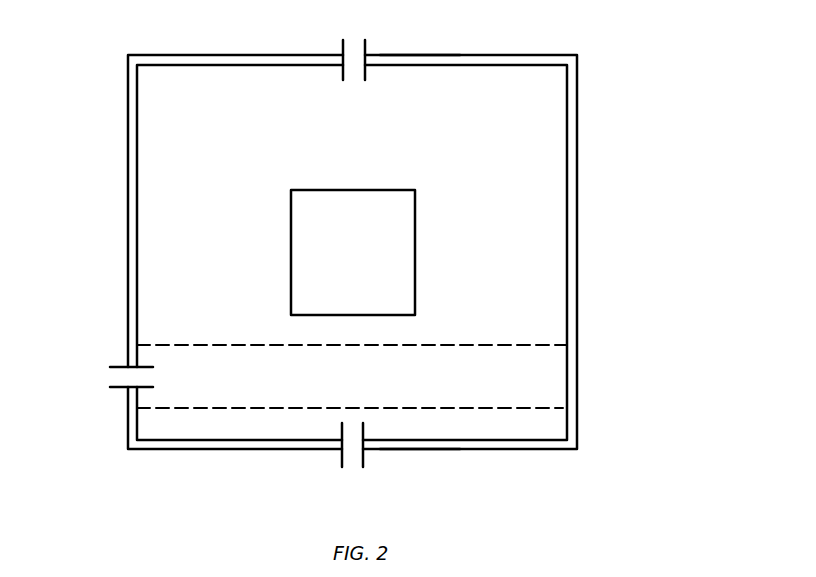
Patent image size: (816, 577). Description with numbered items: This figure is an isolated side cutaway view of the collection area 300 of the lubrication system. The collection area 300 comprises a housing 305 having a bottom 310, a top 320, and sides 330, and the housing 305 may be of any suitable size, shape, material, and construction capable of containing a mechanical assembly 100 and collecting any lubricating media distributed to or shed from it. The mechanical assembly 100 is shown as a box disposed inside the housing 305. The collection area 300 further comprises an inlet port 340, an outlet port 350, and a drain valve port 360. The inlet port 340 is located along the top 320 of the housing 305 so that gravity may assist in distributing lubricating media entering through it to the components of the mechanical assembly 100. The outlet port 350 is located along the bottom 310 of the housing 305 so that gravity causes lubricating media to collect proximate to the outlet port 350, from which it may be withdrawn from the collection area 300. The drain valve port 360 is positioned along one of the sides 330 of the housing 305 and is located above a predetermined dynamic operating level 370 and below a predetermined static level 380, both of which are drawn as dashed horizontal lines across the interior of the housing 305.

The mechanical assembly 100 is at (371, 263).
The collection area 300 is at (632, 279).
The housing 305 is at (578, 95).
The bottom 310 is at (480, 449).
The top 320 is at (474, 55).
The sides 330 is at (578, 193).
The inlet port 340 is at (353, 58).
The outlet port 350 is at (352, 440).
The drain valve port 360 is at (115, 378).
The predetermined dynamic operating level 370 is at (130, 408).
The predetermined static level 380 is at (137, 345).